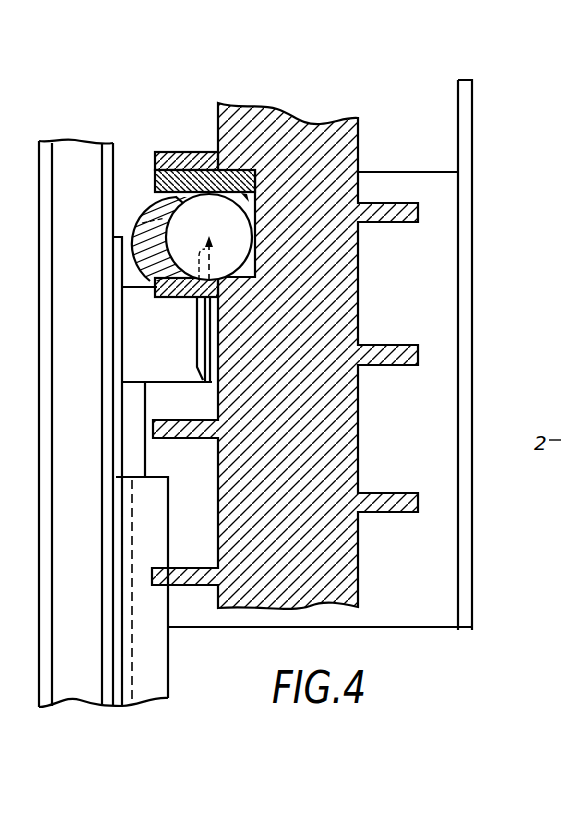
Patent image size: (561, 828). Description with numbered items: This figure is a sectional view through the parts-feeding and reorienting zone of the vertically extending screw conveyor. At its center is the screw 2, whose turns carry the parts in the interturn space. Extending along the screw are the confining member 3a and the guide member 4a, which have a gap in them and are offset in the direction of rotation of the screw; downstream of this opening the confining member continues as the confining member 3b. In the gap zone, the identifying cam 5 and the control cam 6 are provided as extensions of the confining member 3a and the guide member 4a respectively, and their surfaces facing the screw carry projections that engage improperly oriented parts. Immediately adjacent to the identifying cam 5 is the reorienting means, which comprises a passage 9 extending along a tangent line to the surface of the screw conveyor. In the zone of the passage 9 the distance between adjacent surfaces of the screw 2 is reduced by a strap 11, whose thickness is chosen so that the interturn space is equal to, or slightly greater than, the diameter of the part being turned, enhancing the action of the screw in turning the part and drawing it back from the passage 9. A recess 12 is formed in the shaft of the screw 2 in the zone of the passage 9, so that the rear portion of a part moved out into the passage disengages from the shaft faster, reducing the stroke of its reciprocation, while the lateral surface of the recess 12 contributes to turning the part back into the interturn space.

The screw 2 is at (348, 555).
The confining member 3a is at (115, 662).
The confining member 3b is at (467, 141).
The guide member 4a is at (132, 511).
The identifying cam 5 is at (130, 398).
The control cam 6 is at (118, 317).
The passage 9 is at (142, 308).
The strap 11 is at (157, 183).
The recess 12 is at (217, 163).